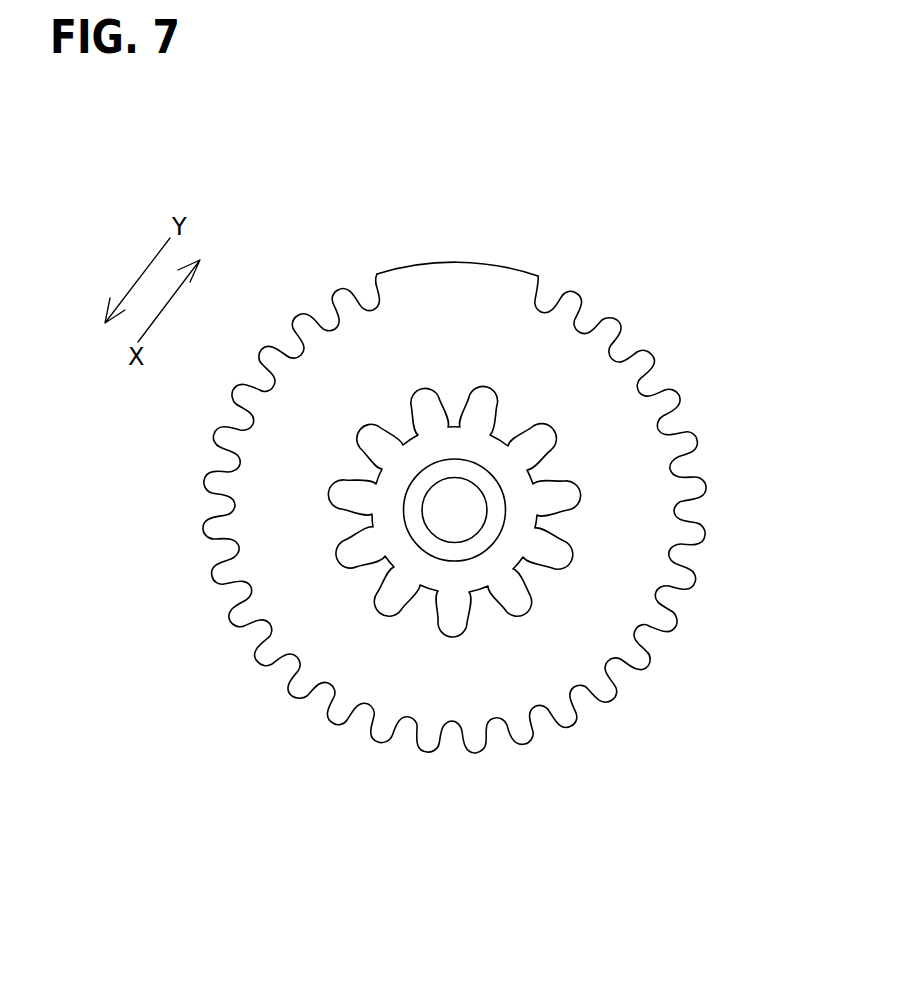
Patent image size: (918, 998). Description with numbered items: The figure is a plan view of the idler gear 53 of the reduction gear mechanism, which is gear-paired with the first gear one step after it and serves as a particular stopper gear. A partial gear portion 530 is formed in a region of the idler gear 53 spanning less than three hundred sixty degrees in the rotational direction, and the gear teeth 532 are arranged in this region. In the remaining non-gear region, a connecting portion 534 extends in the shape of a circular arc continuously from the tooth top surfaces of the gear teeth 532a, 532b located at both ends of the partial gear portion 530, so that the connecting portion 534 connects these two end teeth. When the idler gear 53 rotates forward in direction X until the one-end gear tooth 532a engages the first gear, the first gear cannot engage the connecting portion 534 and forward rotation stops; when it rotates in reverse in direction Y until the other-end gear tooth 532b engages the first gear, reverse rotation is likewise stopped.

The idler gear 53 is at (666, 280).
The partial gear portion 530 is at (433, 737).
The gear teeth 532 is at (300, 317).
The one-end gear tooth 532a is at (534, 300).
The other-end gear tooth 532b is at (378, 290).
The connecting portion 534 is at (455, 282).